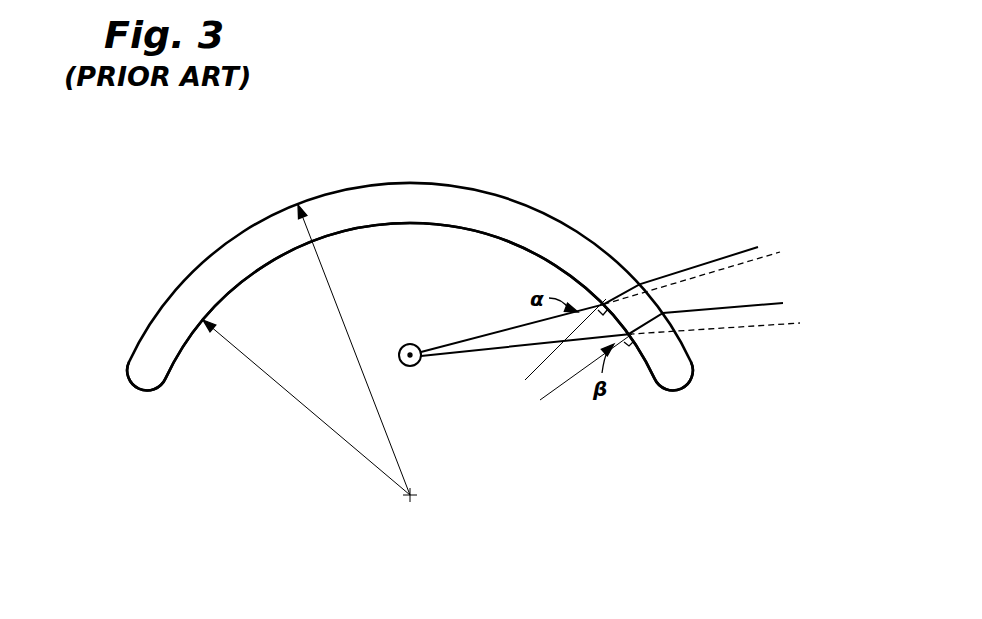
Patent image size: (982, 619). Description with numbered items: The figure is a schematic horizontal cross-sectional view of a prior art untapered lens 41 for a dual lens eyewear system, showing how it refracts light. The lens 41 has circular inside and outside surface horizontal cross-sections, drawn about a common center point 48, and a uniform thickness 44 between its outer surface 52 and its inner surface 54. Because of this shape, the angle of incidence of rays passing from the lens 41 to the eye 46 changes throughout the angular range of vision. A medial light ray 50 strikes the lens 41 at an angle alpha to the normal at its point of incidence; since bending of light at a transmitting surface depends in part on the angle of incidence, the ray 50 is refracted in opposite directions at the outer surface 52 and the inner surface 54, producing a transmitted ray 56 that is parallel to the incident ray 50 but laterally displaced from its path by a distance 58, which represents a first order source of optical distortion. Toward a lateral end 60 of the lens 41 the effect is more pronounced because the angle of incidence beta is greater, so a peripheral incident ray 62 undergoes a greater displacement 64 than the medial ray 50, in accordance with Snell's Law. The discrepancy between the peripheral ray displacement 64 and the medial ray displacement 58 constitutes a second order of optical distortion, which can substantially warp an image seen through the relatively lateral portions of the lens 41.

The prior art lens 41 is at (447, 338).
The uniform thickness 44 is at (486, 179).
The eye 46 is at (420, 364).
The center of curvature 48 is at (412, 497).
The medial light ray 50 is at (753, 248).
The outer surface 52 is at (257, 226).
The inner surface 54 is at (228, 288).
The transmitted ray 56 is at (458, 344).
The displacement distance 58 is at (758, 247).
The lateral end 60 is at (122, 345).
The peripheral incident ray 62 is at (783, 303).
The peripheral ray displacement 64 is at (787, 313).